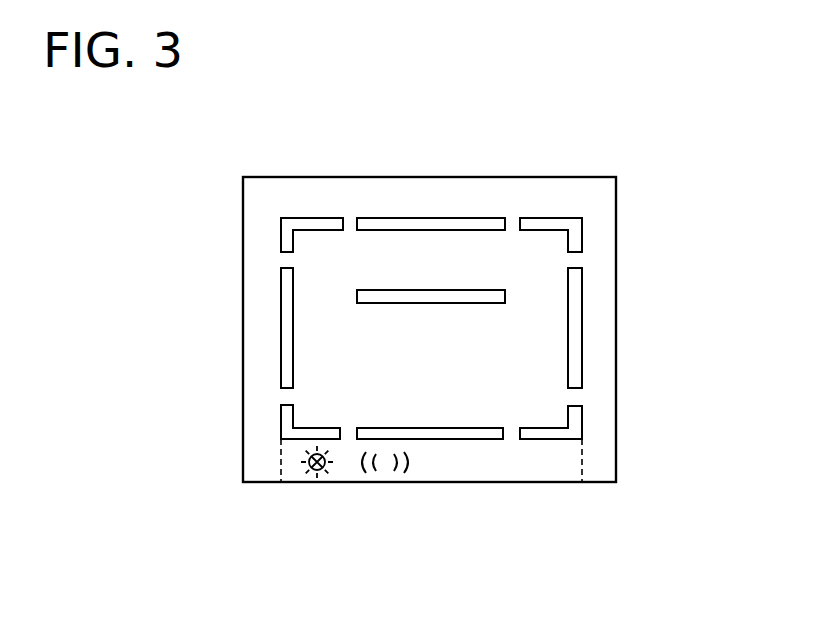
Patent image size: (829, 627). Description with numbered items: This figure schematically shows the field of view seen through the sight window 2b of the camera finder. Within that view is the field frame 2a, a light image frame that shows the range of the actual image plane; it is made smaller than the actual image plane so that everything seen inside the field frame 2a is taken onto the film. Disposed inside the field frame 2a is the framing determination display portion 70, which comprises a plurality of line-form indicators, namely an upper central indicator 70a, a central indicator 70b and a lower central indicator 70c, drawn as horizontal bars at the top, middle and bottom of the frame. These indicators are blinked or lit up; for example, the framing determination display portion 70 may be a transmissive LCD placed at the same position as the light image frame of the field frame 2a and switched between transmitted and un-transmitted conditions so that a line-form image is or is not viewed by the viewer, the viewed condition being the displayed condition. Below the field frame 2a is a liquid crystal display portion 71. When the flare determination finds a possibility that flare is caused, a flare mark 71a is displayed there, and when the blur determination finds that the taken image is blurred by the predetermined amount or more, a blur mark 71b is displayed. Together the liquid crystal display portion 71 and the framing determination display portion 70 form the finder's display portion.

The field frame 2a is at (312, 218).
The sight window 2b is at (617, 291).
The framing determination display portion 70 is at (658, 125).
The upper central indicator 70a is at (457, 219).
The central indicator 70b is at (483, 290).
The lower central indicator 70c is at (485, 428).
The liquid crystal display portion 71 is at (453, 478).
The flare mark 71a is at (308, 480).
The blur mark 71b is at (387, 478).